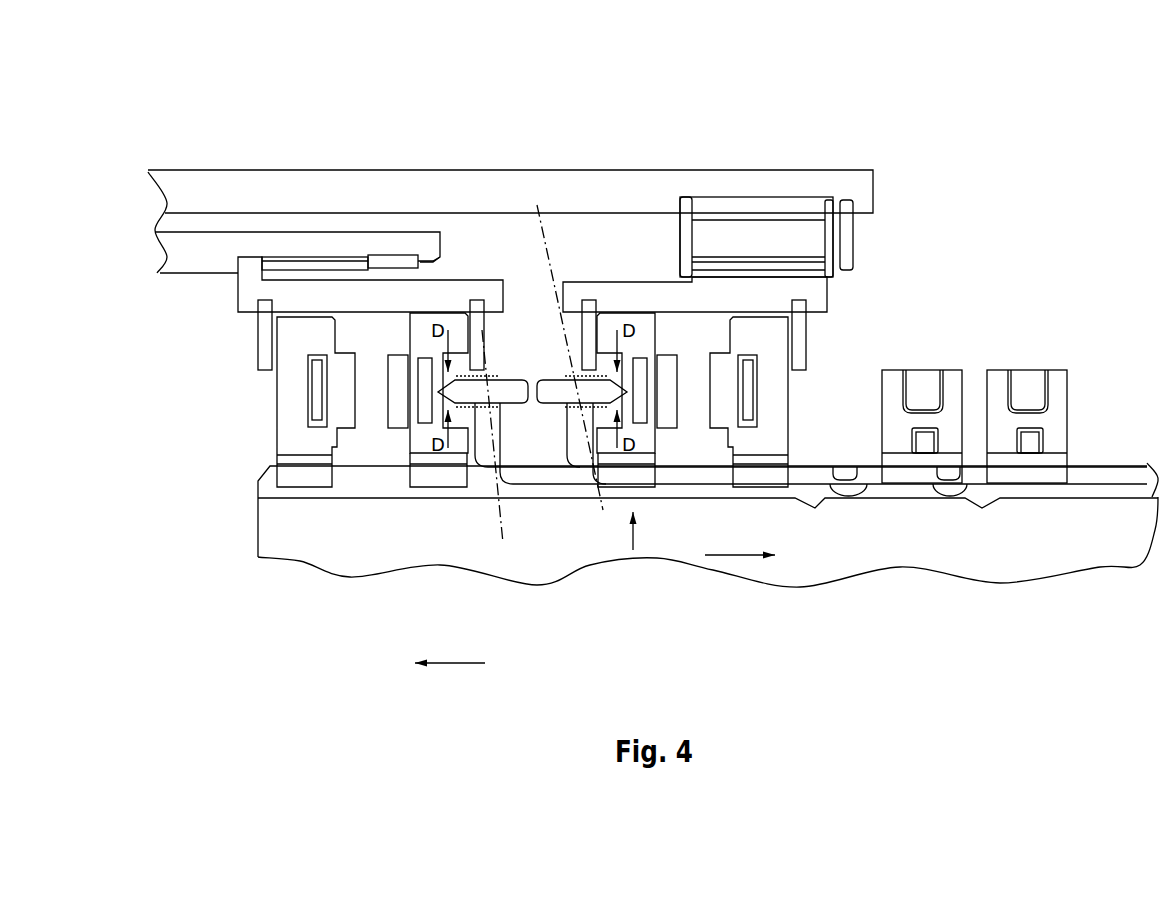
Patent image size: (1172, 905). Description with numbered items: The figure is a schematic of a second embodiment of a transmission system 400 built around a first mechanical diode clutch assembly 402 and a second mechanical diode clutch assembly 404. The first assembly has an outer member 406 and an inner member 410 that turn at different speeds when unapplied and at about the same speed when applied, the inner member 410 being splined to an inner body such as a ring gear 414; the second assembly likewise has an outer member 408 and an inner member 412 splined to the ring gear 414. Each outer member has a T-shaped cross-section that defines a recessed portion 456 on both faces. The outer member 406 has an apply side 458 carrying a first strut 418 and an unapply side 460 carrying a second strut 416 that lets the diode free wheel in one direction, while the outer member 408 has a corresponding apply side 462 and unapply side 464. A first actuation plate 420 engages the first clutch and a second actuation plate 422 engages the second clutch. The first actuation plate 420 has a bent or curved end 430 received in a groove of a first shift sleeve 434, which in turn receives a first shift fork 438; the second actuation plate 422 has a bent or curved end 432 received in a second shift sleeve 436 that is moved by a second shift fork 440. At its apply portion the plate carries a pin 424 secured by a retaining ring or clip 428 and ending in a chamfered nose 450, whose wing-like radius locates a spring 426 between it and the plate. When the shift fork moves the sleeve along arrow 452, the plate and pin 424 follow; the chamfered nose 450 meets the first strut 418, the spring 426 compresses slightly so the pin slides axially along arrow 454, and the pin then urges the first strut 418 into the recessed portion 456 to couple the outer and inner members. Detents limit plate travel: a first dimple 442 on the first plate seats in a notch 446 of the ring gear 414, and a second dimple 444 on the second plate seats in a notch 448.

The transmission system 400 is at (205, 128).
The first mechanical diode clutch assembly 402 is at (620, 271).
The second mechanical diode clutch assembly 404 is at (455, 270).
The outer member 406 is at (648, 285).
The outer member 408 is at (315, 295).
The inner member 410 is at (767, 330).
The inner member 412 is at (290, 435).
The ring gear 414 is at (258, 485).
The second strut 416 is at (317, 400).
The first strut 418 is at (368, 440).
The first actuation plate 420 is at (545, 440).
The second actuation plate 422 is at (520, 440).
The pin 424 is at (513, 440).
The spring 426 is at (542, 374).
The retaining ring or clip 428 is at (531, 376).
The bent or curved end 430 is at (1030, 443).
The bent or curved end 432 is at (897, 495).
The first shift sleeve 434 is at (1058, 387).
The second shift sleeve 436 is at (893, 385).
The first shift fork 438 is at (1027, 383).
The second shift fork 440 is at (923, 383).
The first dimple 442 is at (950, 495).
The second dimple 444 is at (847, 494).
The notch 446 is at (980, 495).
The notch 448 is at (816, 505).
The chamfered nose 450 is at (431, 386).
The arrow 452 is at (743, 560).
The arrow 454 is at (446, 668).
The recessed portion 456 is at (348, 395).
The apply side 458 is at (628, 566).
The unapply side 460 is at (803, 391).
The apply side 462 is at (488, 325).
The unapply side 464 is at (318, 346).